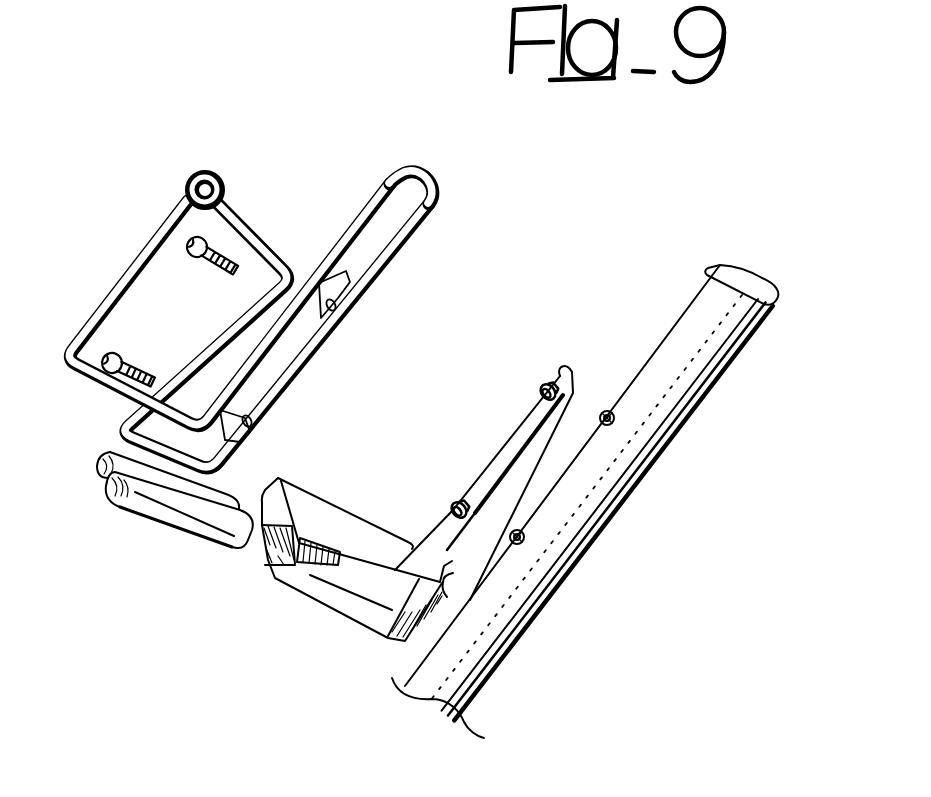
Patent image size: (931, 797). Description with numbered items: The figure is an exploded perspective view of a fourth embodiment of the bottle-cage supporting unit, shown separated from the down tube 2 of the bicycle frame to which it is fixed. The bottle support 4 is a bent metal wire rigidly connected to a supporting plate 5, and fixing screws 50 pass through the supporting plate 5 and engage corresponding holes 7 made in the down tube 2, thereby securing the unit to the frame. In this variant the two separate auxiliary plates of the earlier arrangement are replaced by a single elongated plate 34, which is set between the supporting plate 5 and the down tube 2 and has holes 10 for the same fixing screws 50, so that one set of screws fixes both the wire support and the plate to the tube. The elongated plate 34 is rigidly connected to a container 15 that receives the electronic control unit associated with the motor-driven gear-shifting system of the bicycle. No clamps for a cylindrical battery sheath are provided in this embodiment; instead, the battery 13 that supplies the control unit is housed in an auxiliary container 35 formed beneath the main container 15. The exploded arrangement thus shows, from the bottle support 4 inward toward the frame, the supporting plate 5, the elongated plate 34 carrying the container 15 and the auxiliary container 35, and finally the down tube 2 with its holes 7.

The down tube 2 is at (678, 381).
The support 4 is at (121, 261).
The supporting plate 5 is at (320, 282).
The holes 7 is at (613, 425).
The holes 10 is at (450, 510).
The battery 13 is at (104, 495).
The container 15 is at (325, 512).
The elongated plate 34 is at (507, 450).
The auxiliary container 35 is at (342, 598).
The fixing screws 50 is at (210, 268).